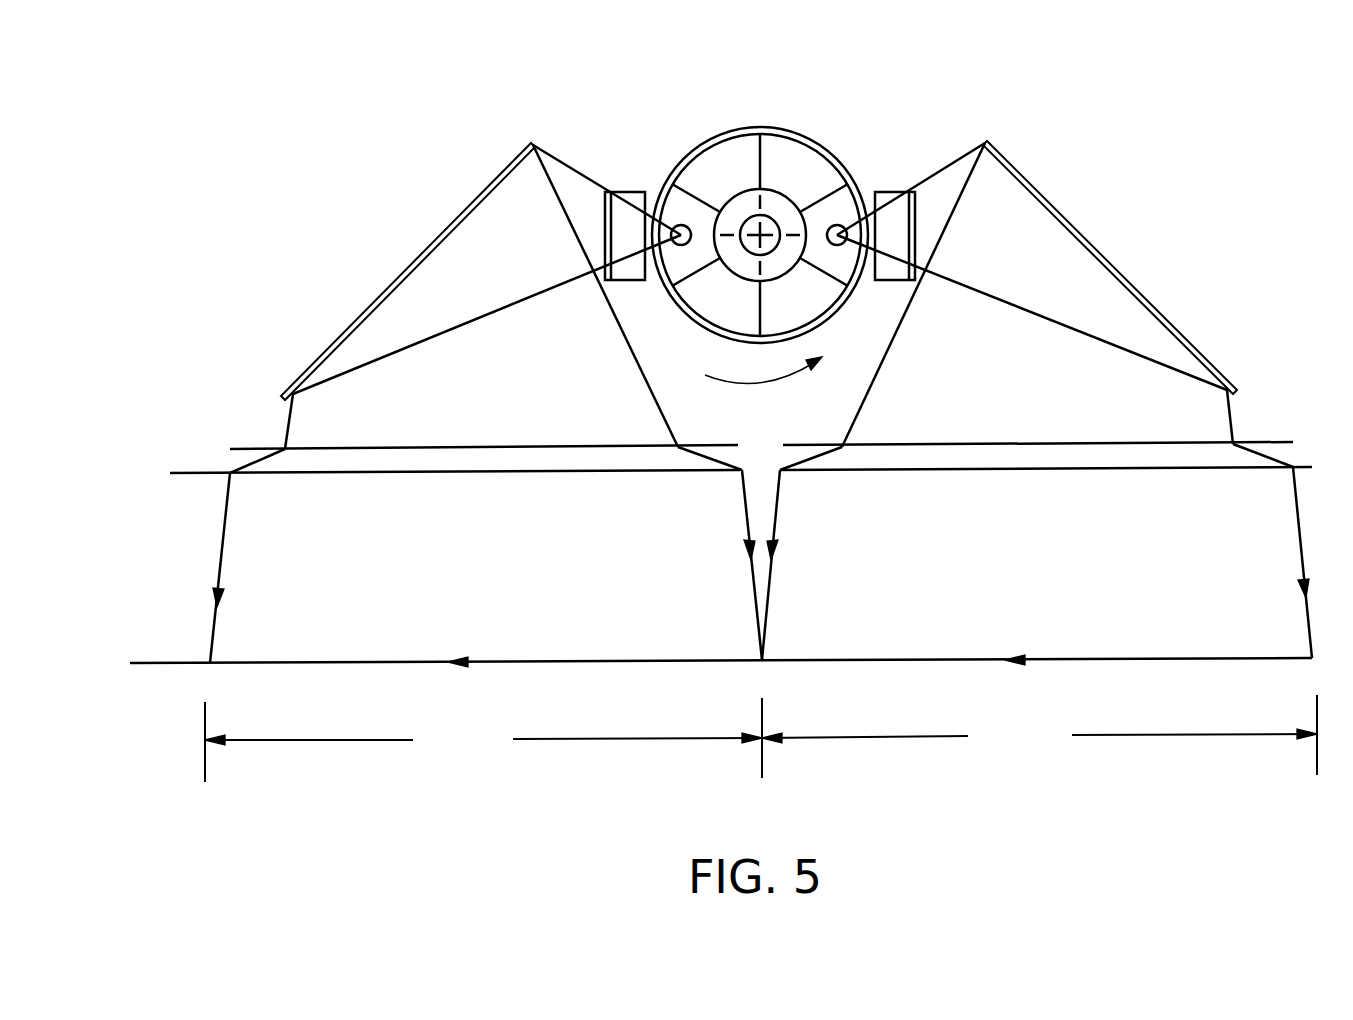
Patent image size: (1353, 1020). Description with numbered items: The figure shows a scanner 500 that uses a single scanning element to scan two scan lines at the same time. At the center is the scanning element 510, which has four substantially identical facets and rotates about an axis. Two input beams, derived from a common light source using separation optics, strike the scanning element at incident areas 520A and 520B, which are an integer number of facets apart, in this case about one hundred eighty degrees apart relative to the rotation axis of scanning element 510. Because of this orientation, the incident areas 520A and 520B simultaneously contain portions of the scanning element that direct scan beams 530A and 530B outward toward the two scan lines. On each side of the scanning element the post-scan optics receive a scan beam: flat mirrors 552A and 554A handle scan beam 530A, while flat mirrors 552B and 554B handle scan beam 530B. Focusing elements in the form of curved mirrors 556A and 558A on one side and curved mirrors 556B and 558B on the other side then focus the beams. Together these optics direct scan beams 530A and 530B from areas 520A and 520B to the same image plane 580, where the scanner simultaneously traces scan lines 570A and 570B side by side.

The scanner 500 is at (298, 130).
The scanning element 510 is at (760, 126).
The incident area 520A is at (840, 220).
The incident area 520B is at (678, 220).
The flat mirror 552A is at (886, 190).
The flat mirror 552B is at (632, 190).
The flat mirror 554A is at (1014, 162).
The flat mirror 554B is at (503, 160).
The scan beam 530A is at (852, 418).
The scan beam 530B is at (667, 419).
The curved mirror 556A is at (1236, 420).
The curved mirror 556B is at (290, 422).
The curved mirror 558A is at (1246, 476).
The curved mirror 558B is at (290, 476).
The scan line 570A is at (1039, 735).
The scan line 570B is at (483, 740).
The image plane 580 is at (168, 661).